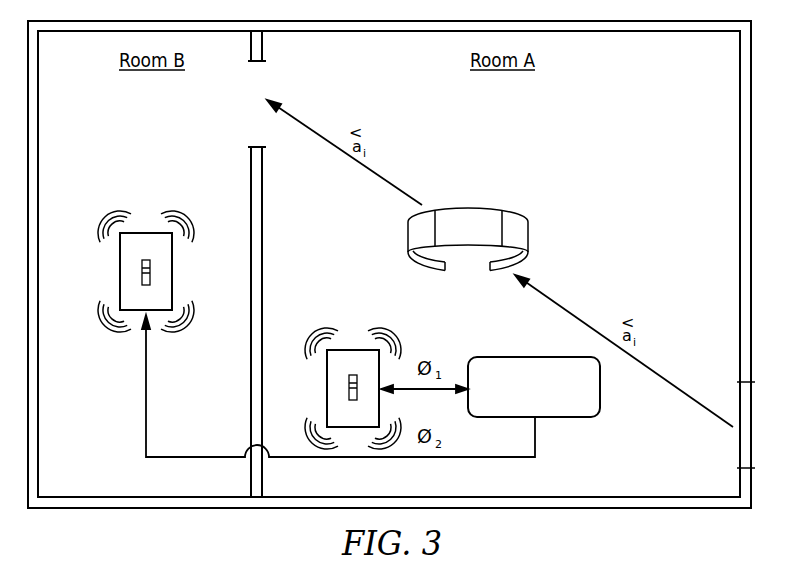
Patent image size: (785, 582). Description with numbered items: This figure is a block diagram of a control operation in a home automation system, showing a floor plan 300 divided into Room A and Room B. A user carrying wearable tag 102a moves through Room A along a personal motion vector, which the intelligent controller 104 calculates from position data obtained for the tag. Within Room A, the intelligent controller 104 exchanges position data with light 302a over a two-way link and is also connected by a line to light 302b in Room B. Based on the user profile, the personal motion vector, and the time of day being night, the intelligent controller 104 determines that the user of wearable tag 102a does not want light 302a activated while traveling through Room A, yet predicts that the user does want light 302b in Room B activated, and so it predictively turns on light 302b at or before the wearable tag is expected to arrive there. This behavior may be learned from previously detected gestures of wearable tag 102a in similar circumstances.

The environment / building floor plan 300 is at (83, 68).
The light 302a is at (351, 350).
The light 302b is at (146, 233).
The wearable tag 102a is at (451, 237).
The intelligent controller 104 is at (521, 398).